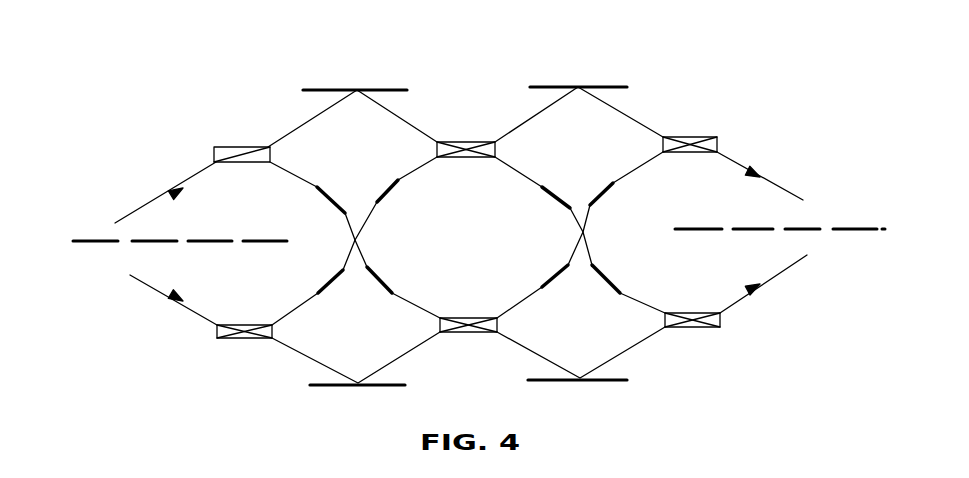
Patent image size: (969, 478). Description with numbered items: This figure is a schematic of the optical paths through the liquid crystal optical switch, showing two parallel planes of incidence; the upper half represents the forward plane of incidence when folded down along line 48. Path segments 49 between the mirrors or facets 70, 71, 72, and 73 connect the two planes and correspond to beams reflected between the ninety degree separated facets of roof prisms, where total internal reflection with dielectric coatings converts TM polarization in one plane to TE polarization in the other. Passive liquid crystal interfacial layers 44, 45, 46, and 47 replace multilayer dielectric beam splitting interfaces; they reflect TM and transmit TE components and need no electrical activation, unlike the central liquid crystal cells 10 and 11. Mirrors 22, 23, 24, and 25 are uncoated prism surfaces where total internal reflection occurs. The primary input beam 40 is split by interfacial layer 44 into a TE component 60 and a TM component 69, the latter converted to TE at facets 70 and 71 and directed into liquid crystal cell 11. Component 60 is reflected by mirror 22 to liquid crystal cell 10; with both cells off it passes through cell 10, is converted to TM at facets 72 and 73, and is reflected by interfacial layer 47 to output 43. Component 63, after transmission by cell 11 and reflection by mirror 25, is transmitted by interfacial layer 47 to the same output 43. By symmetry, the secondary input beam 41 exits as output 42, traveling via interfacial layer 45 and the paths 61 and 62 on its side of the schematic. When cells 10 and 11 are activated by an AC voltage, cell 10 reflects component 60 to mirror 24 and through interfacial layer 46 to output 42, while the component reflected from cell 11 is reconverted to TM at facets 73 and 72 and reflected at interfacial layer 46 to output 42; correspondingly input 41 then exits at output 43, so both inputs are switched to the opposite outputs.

The liquid crystal cell 10 is at (470, 333).
The liquid crystal cell 11 is at (468, 139).
The mirror 22 is at (315, 387).
The mirror 23 is at (328, 88).
The mirror 24 is at (563, 383).
The mirror 25 is at (615, 86).
The primary input beam 40 is at (152, 288).
The secondary input beam 41 is at (145, 205).
The output 42 is at (770, 277).
The output 43 is at (787, 188).
The liquid crystal interfacial layer 44 is at (235, 338).
The liquid crystal interfacial layer 45 is at (227, 146).
The liquid crystal interfacial layer 46 is at (700, 328).
The liquid crystal interfacial layer 47 is at (700, 135).
The line 48 is at (97, 240).
The path segments 49 is at (365, 238).
The TE component 60 is at (310, 365).
The beam path 61 is at (295, 121).
The beam path 62 is at (652, 340).
The component 63 is at (642, 120).
The TM component 69 is at (273, 322).
The facet 70 is at (392, 293).
The facet 71 is at (392, 182).
The facet 72 is at (620, 292).
The facet 73 is at (615, 181).